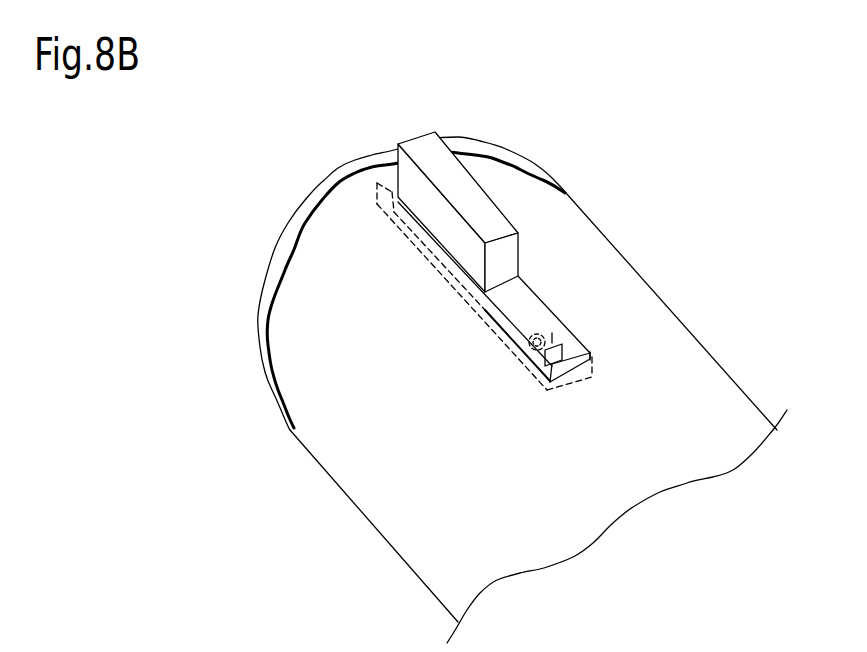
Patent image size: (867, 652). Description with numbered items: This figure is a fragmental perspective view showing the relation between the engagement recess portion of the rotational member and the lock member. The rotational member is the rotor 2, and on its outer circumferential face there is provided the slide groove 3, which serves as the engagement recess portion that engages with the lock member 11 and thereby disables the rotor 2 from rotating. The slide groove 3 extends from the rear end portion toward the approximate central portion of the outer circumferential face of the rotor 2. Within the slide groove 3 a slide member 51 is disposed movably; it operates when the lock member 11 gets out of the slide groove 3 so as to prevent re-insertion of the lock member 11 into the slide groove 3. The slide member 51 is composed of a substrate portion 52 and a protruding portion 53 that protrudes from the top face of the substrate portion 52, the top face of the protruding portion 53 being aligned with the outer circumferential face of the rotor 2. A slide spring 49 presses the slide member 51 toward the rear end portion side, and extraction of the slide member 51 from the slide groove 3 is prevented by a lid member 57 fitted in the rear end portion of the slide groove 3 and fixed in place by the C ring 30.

The rotor 2 is at (365, 421).
The slide groove 3 is at (556, 335).
The lock member 11 is at (477, 205).
The C ring 30 is at (297, 223).
The slide spring 49 is at (525, 343).
The slide member 51 is at (500, 303).
The substrate portion 52 is at (428, 247).
The protruding portion 53 is at (525, 303).
The lid member 57 is at (397, 182).